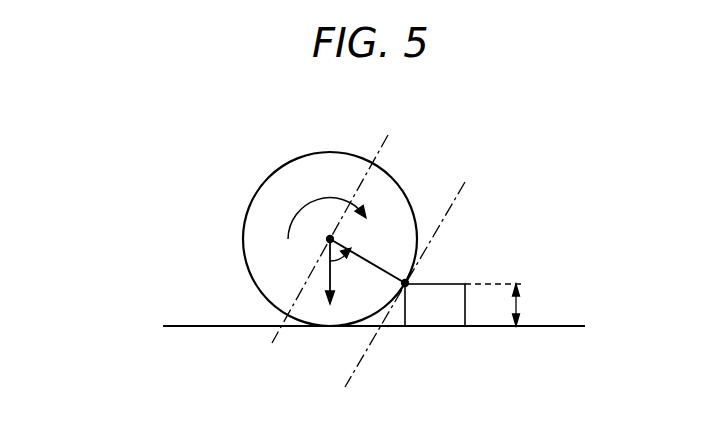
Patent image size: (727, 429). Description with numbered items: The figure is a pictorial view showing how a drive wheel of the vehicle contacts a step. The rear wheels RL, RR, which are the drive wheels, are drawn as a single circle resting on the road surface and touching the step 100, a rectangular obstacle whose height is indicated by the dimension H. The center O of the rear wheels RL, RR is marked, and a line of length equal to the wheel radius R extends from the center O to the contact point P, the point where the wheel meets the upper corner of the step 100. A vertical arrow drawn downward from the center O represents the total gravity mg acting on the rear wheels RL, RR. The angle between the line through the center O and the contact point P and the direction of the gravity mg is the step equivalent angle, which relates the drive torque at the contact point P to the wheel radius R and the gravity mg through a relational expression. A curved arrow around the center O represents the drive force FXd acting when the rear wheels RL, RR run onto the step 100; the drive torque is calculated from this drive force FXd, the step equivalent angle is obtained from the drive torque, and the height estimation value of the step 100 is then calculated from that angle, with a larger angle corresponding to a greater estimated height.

The rear wheel RL is at (330, 211).
The rear wheel RR is at (332, 152).
The center of the rear wheels O is at (326, 241).
The radius of the rear wheels R is at (388, 270).
The contact point P is at (408, 282).
The total of the gravity acting on the rear wheels mg is at (326, 273).
The drive force FXd is at (307, 205).
The step 100 is at (421, 324).
The step height H is at (519, 305).